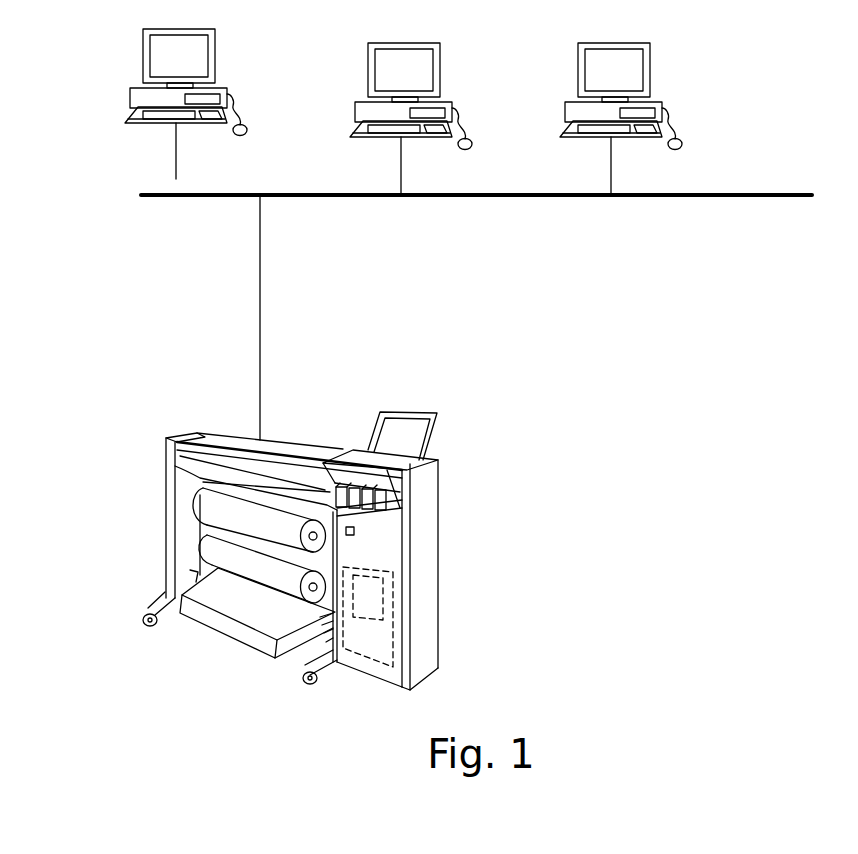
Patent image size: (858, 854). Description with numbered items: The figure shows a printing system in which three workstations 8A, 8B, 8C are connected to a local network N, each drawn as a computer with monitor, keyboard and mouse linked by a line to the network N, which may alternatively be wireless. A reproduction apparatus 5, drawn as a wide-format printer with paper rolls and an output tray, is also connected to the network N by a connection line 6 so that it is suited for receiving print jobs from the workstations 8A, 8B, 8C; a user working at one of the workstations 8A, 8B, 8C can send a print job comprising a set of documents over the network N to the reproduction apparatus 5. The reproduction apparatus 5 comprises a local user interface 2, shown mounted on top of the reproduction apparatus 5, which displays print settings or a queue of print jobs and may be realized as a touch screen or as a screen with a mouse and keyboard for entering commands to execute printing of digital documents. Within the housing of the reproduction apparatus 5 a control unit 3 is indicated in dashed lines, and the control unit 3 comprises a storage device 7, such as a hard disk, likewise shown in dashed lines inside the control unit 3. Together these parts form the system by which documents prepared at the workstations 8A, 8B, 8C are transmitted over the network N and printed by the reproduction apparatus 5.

The workstation 8A is at (230, 94).
The workstation 8B is at (450, 112).
The workstation 8C is at (660, 112).
The local network N is at (812, 197).
The network connection 6 is at (261, 315).
The reproduction apparatus 5 is at (392, 541).
The local user interface 2 is at (368, 422).
The control unit 3 is at (373, 645).
The storage device 7 is at (366, 592).